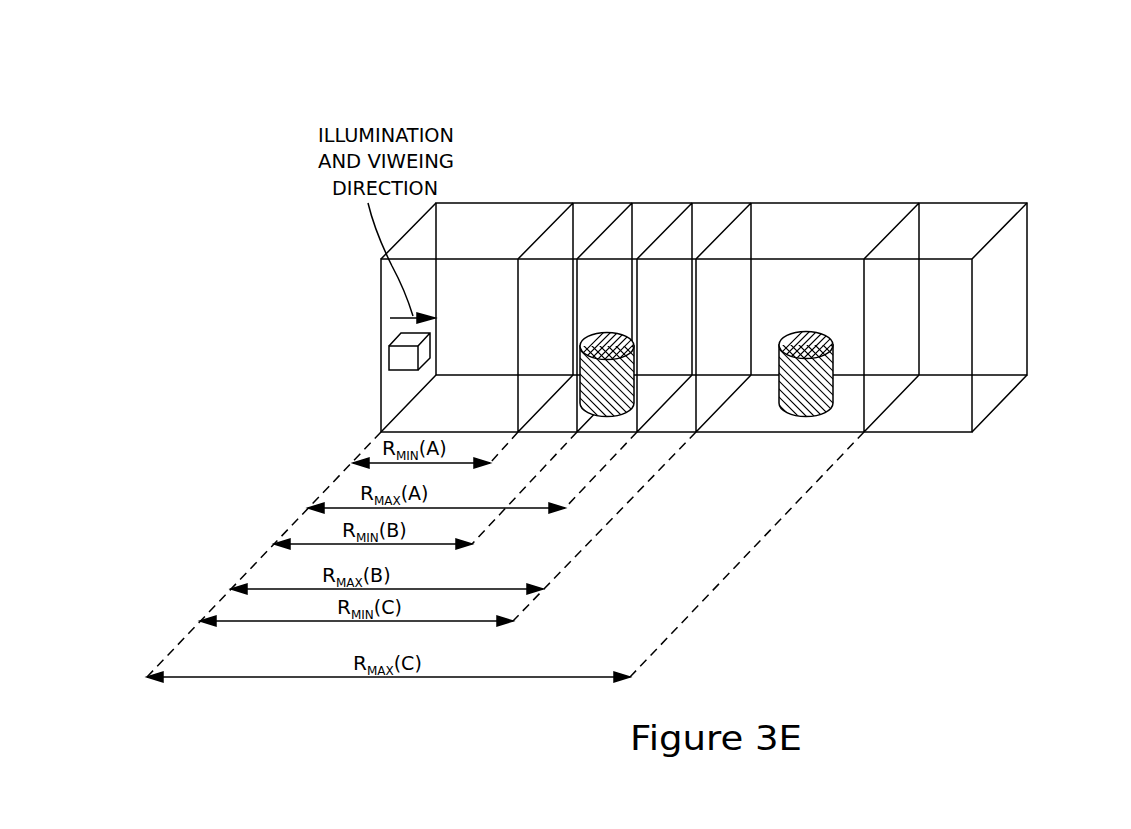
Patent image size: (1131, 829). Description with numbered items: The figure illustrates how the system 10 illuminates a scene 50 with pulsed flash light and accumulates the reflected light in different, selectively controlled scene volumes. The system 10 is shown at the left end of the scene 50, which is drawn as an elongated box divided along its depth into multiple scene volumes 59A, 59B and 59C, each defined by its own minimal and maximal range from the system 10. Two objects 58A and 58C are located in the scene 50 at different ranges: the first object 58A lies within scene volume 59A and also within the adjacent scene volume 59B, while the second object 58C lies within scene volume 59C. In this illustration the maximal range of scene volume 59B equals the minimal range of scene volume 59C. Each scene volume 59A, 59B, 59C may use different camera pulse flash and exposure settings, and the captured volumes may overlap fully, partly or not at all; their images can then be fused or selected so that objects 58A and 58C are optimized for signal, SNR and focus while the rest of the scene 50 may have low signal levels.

The system 10 is at (405, 372).
The scene 50 is at (1027, 290).
The object 58A is at (600, 413).
The object 58C is at (777, 390).
The scene volume 59A is at (573, 203).
The scene volume 59B is at (752, 203).
The scene volume 59C is at (752, 203).